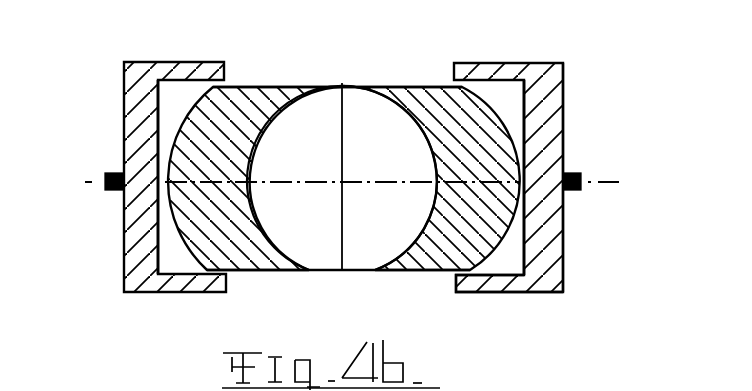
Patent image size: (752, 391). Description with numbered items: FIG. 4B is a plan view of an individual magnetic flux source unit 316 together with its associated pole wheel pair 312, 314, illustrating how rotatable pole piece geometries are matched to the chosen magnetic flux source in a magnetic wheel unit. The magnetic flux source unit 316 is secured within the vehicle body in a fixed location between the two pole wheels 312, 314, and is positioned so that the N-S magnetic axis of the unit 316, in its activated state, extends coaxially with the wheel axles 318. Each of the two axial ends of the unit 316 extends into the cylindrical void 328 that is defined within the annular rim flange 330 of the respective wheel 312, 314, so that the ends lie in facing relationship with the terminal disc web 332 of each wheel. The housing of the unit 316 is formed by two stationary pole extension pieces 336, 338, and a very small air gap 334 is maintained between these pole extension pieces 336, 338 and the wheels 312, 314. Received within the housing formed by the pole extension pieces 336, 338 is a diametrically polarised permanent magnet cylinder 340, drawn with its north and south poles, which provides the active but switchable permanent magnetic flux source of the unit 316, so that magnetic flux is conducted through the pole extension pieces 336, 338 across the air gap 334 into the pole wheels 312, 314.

The pole wheel 312 is at (571, 108).
The pole wheel 314 is at (130, 88).
The magnetic flux source unit 316 is at (329, 78).
The wheel axle 318 is at (105, 190).
The cylindrical void 328 is at (181, 97).
The annular rim flange 330 is at (494, 283).
The terminal disc web 332 is at (543, 240).
The air gap 334 is at (162, 198).
The pole extension piece 336 is at (257, 257).
The pole extension piece 338 is at (430, 258).
The permanent magnet cylinder 340 is at (333, 144).